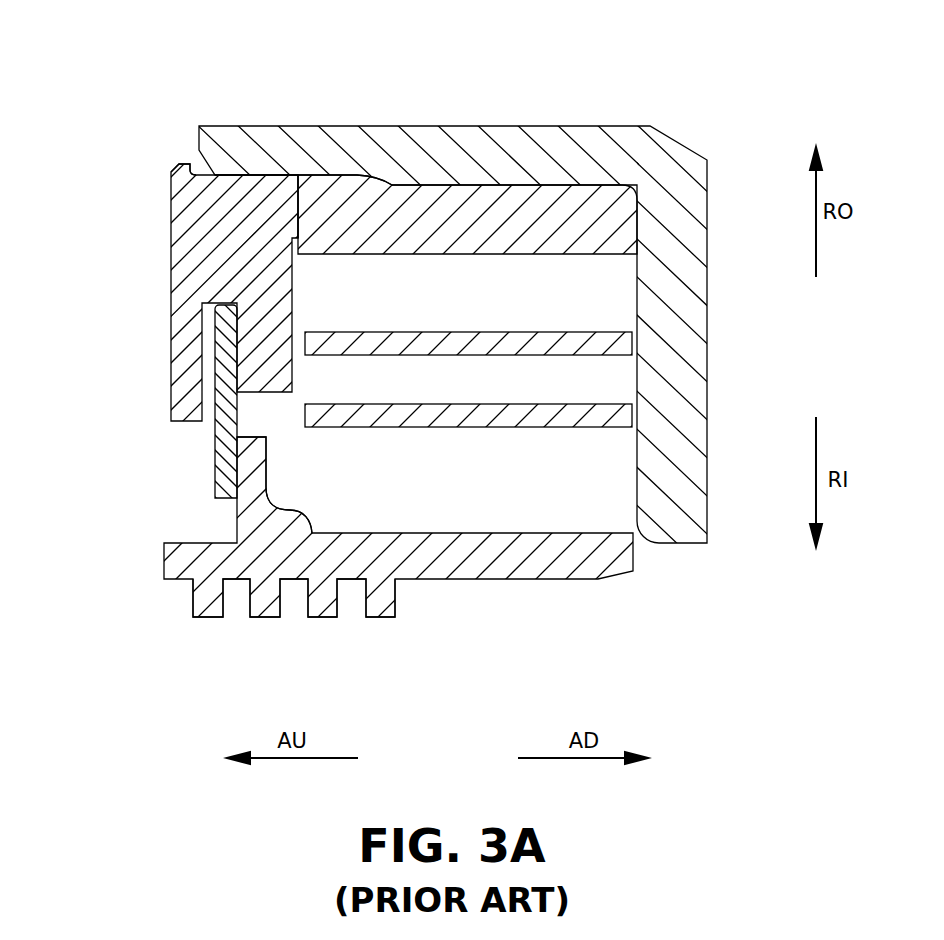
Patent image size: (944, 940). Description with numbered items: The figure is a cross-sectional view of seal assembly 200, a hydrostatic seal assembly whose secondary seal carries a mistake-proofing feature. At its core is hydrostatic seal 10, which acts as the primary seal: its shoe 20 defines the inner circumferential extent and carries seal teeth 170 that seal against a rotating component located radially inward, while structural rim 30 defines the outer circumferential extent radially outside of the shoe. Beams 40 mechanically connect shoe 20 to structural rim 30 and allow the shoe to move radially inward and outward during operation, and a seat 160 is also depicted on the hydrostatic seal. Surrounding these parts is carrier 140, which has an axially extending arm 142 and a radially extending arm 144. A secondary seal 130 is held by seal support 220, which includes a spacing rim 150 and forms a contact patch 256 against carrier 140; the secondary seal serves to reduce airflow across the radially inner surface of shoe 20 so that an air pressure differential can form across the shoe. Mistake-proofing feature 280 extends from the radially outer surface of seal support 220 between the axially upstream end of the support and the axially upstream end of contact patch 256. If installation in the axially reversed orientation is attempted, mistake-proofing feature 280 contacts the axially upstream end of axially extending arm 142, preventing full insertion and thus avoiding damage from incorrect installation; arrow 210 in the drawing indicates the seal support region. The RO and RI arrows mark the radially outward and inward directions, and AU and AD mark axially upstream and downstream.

The hydrostatic seal 10 is at (472, 382).
The shoe 20 is at (417, 561).
The structural rim 30 is at (445, 234).
The beams 40 is at (620, 414).
The secondary seal 130 is at (215, 438).
The carrier 140 is at (472, 311).
The axially extending arm 142 is at (456, 126).
The radially extending arm 144 is at (708, 214).
The spacing rim 150 is at (298, 218).
The seat 160 is at (262, 499).
The seal teeth 170 is at (303, 637).
The seal assembly 200 is at (280, 258).
The seal member 210 is at (280, 254).
The seal support 220 is at (280, 254).
The contact patch 256 is at (247, 175).
The mistake-proofing feature 280 is at (170, 170).